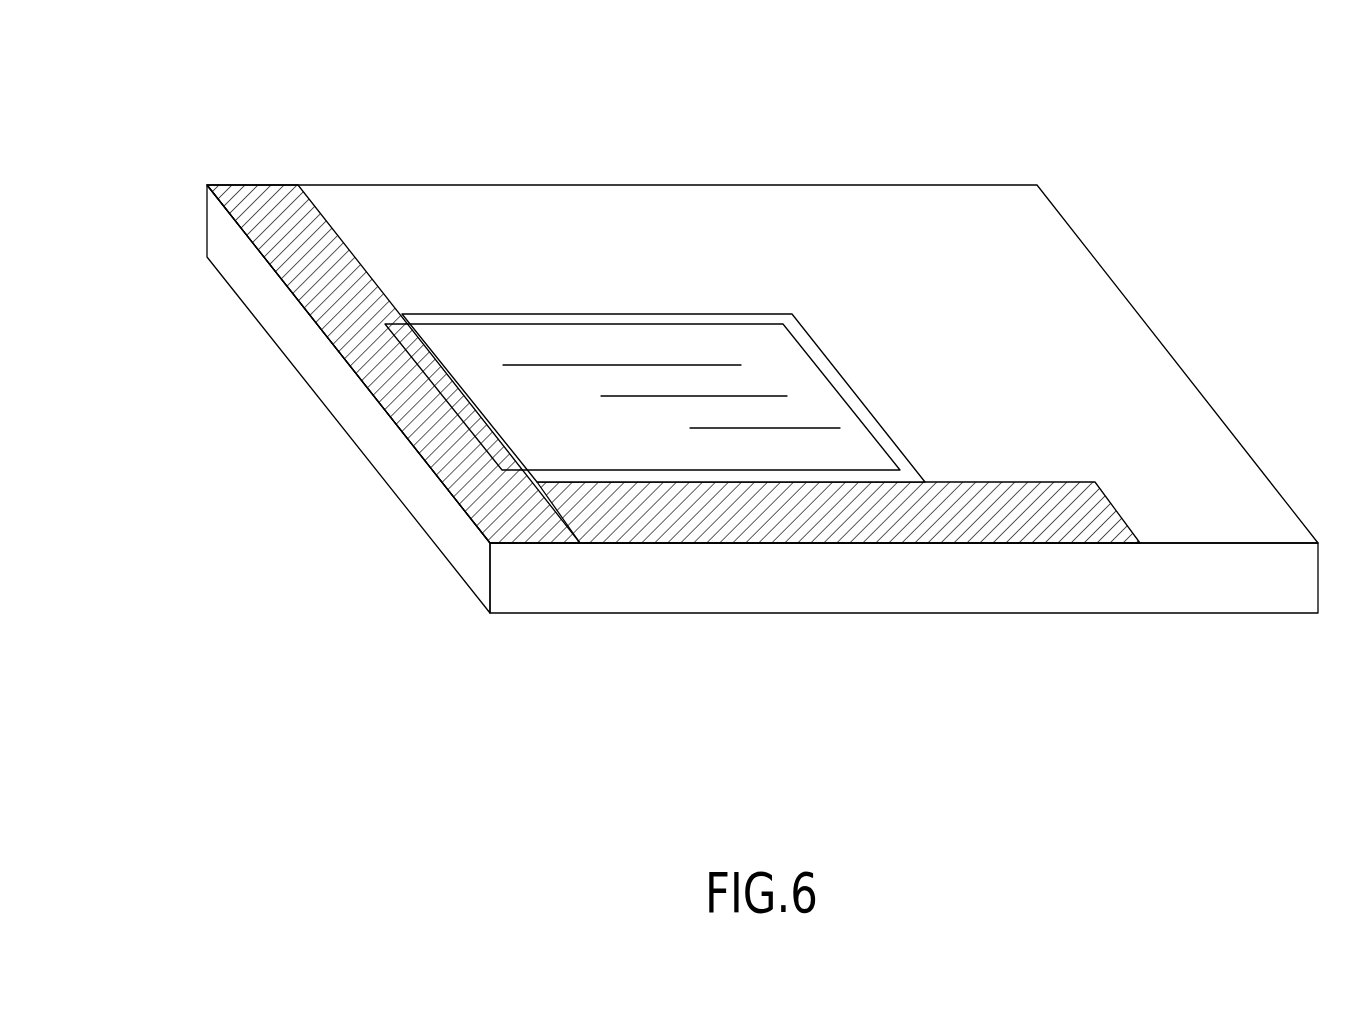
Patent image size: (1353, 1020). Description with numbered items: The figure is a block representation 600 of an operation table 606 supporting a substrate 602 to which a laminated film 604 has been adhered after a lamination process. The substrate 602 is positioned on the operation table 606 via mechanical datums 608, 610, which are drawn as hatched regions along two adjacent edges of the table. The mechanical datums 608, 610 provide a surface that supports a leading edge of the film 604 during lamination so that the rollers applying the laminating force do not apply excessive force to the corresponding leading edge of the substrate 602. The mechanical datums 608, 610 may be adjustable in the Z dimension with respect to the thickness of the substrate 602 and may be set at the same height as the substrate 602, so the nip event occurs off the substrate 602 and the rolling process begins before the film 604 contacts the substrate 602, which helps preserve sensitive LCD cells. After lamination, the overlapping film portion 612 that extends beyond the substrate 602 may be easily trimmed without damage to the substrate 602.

The block representation 600 is at (183, 76).
The substrate 602 is at (823, 405).
The laminated film 604 is at (773, 318).
The operation table 606 is at (942, 200).
The mechanical datum 608 is at (261, 200).
The mechanical datum 610 is at (1078, 530).
The overlapping film portion 612 is at (421, 358).